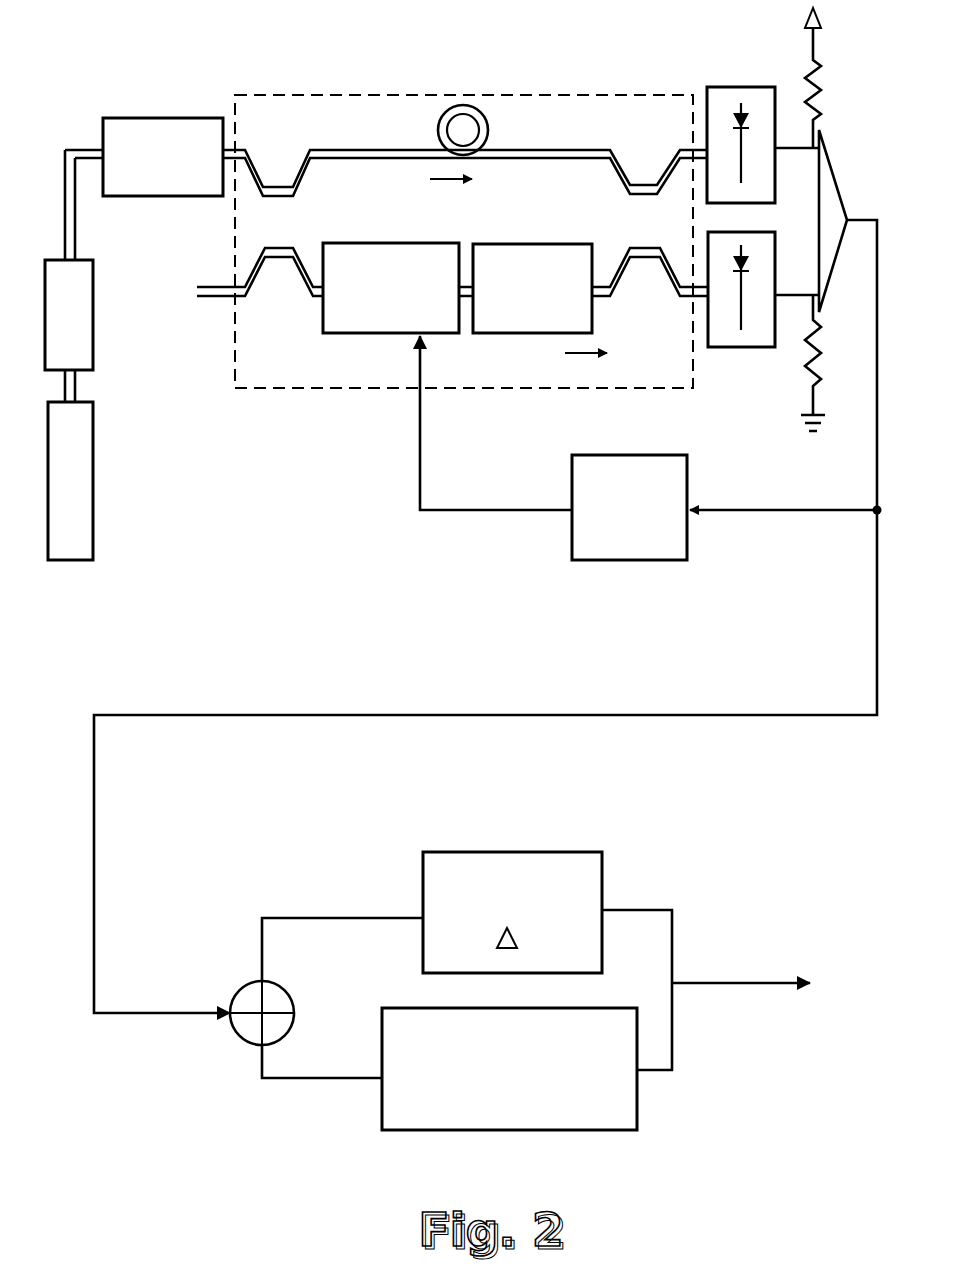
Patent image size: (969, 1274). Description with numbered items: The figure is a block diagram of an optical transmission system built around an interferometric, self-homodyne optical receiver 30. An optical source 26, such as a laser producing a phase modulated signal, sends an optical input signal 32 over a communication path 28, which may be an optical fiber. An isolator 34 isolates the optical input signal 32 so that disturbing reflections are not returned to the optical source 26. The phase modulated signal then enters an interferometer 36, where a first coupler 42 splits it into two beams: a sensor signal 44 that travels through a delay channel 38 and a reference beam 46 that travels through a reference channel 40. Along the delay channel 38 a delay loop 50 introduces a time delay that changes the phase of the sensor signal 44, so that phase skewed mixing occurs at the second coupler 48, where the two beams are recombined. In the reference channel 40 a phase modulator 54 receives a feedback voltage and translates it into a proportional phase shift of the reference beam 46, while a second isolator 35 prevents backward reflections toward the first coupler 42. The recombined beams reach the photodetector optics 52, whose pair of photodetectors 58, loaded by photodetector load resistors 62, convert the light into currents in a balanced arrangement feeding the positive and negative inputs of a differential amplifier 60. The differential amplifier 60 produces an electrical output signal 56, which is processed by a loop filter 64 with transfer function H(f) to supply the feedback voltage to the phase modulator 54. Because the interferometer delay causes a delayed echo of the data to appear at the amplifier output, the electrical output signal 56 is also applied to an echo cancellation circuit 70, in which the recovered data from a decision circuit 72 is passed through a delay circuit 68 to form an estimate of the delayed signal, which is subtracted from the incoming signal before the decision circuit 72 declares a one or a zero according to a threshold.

The optical source 26 is at (94, 474).
The communication path 28 is at (94, 306).
The self-homodyne optical receiver 30 is at (158, 96).
The optical input signal 32 is at (77, 203).
The isolator 34 is at (180, 117).
The second isolator 35 is at (517, 335).
The interferometer 36 is at (487, 93).
The delay channel 38 is at (549, 150).
The reference channel 40 is at (462, 287).
The first coupler 42 is at (277, 168).
The sensor signal 44 is at (429, 181).
The reference beam 46 is at (567, 361).
The second coupler 48 is at (640, 170).
The delay loop 50 is at (485, 128).
The photodetector optics 52 is at (755, 390).
The phase modulator 54 is at (370, 335).
The electrical output signal 56 is at (877, 237).
The photodetectors 58 is at (742, 87).
The differential amplifier 60 is at (837, 183).
The photodetector load resistors 62 is at (818, 93).
The loop filter 64 is at (623, 560).
The delay circuit 68 is at (602, 878).
The echo cancellation circuit 70 is at (605, 818).
The decision circuit 72 is at (637, 1102).